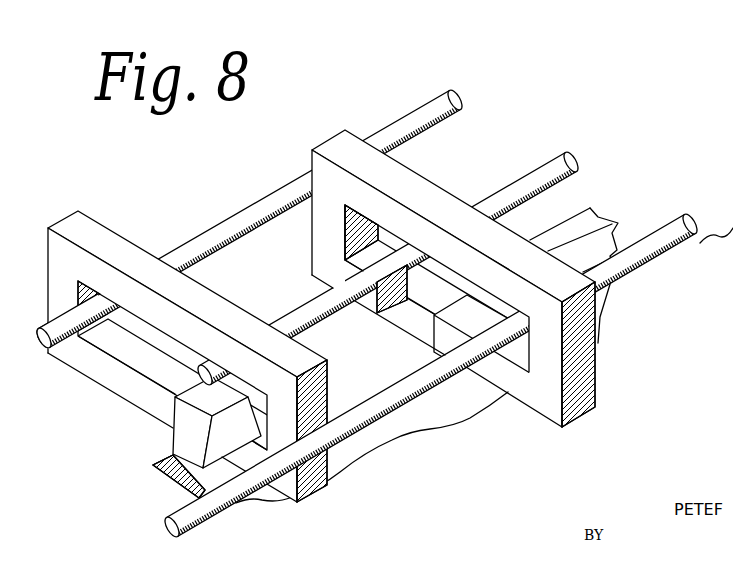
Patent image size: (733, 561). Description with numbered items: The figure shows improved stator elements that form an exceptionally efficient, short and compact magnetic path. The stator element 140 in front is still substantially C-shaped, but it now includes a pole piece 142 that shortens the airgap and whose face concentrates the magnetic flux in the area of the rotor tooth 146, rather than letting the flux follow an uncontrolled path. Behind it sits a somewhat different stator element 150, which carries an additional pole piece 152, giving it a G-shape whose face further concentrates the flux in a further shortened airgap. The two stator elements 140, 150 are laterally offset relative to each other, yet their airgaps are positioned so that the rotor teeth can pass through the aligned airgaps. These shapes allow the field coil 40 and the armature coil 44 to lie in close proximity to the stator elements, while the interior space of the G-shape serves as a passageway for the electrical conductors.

The stator element 140 is at (79, 203).
The stator element 150 is at (348, 80).
The armature coil 44 is at (466, 116).
The field coil 40 is at (576, 174).
The pole piece 142 is at (120, 396).
The rotor tooth 146 is at (178, 438).
The additional pole piece 152 is at (370, 309).